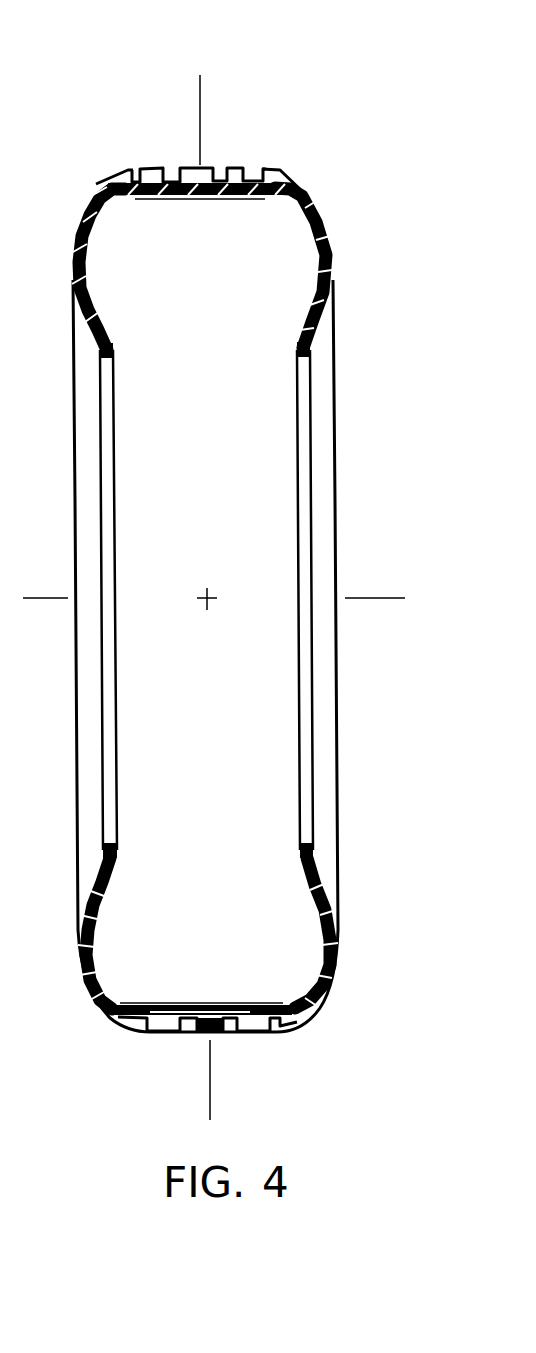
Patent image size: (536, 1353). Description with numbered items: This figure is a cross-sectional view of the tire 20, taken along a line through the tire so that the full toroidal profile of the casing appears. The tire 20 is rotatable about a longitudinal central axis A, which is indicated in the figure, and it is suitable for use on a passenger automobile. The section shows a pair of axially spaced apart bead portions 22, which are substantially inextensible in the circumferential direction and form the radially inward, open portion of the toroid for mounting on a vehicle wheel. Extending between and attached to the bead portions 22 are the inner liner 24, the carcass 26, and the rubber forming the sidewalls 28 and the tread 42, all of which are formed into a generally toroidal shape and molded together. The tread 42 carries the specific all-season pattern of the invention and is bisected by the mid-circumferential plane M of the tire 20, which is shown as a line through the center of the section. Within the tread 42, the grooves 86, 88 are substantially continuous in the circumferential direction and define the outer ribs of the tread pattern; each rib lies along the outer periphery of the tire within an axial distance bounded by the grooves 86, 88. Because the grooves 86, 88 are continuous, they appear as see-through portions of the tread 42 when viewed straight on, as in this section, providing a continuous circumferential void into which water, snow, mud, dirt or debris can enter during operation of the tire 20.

The tire 20 is at (208, 561).
The bead portions 22 is at (113, 350).
The inner liner 24 is at (85, 282).
The carcass 26 is at (327, 243).
The sidewalls 28 is at (80, 473).
The tread 42 is at (167, 145).
The groove 86 is at (134, 176).
The groove 88 is at (181, 170).
The mid-circumferential plane M is at (201, 127).
The longitudinal central axis A is at (355, 597).